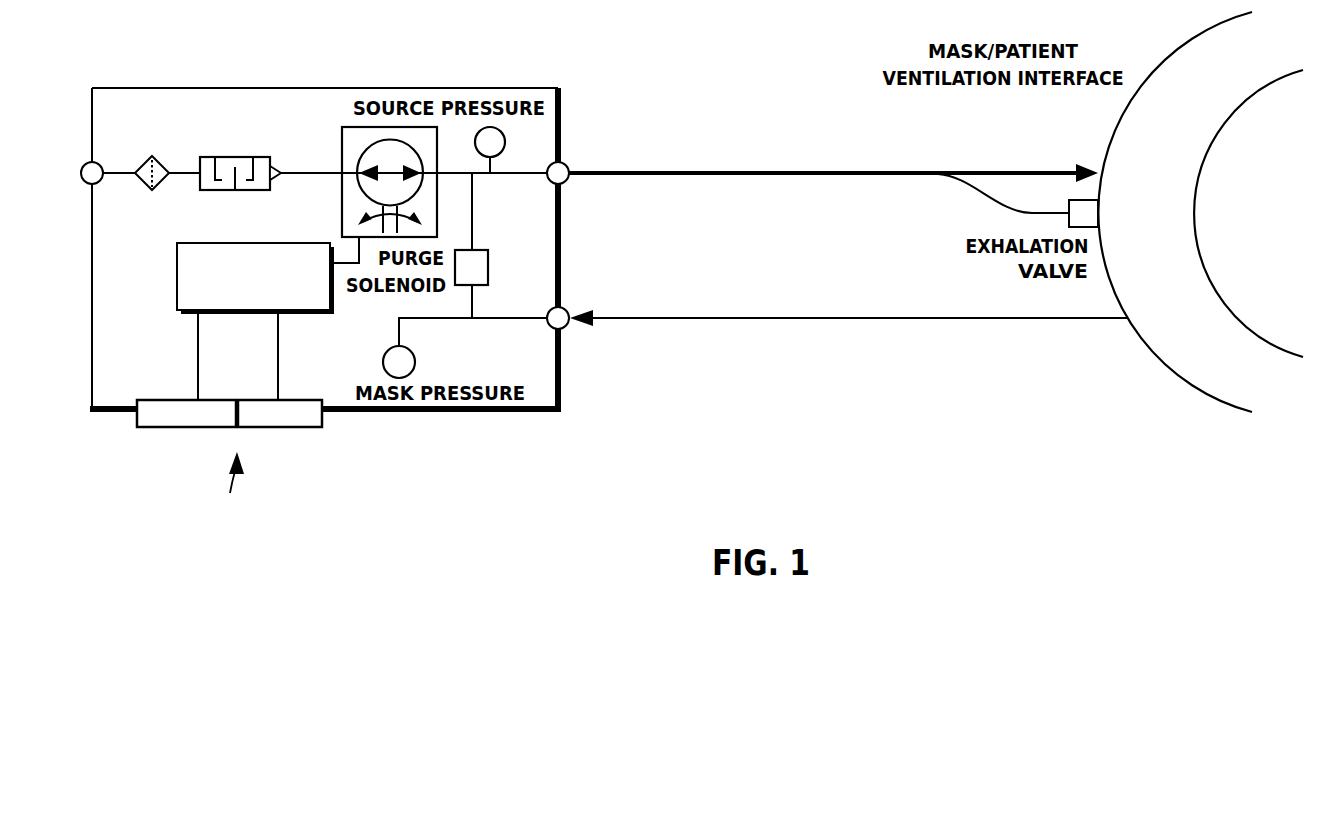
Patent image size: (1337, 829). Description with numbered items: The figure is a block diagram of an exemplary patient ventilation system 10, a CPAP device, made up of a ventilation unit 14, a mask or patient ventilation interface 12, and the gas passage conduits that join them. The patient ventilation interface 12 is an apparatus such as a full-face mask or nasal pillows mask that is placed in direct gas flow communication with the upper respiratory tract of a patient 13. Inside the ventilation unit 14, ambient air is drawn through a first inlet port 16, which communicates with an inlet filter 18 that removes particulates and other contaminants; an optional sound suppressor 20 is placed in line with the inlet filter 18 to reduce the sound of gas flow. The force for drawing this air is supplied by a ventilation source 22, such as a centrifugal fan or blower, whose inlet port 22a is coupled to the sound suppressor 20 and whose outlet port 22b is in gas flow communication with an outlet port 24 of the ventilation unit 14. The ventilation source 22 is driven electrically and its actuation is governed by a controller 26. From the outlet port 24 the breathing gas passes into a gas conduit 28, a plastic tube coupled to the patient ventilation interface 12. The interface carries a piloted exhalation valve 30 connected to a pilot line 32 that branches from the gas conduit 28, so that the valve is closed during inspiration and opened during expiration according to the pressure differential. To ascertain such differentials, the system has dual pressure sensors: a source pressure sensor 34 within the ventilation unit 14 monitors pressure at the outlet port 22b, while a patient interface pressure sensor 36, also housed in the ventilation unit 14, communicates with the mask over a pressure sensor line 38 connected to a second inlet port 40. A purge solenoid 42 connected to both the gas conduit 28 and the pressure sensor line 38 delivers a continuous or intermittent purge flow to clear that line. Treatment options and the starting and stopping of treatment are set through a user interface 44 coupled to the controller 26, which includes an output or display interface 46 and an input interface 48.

The patient ventilation system 10 is at (730, 440).
The patient ventilation interface 12 is at (1175, 212).
The patient 13 is at (1251, 213).
The ventilation unit 14 is at (338, 414).
The first inlet port 16 is at (90, 184).
The inlet filter 18 is at (152, 191).
The sound suppressor 20 is at (228, 192).
The ventilation source 22 is at (387, 182).
The inlet port 22a is at (360, 178).
The outlet port 22b is at (420, 177).
The outlet port 24 is at (569, 165).
The controller 26 is at (177, 273).
The gas conduit 28 is at (778, 168).
The piloted exhalation valve 30 is at (1088, 213).
The pilot line 32 is at (1003, 200).
The source pressure sensor 34 is at (505, 142).
The patient interface pressure sensor 36 is at (415, 362).
The pressure sensor line 38 is at (750, 315).
The second inlet port 40 is at (569, 311).
The purge solenoid 42 is at (488, 268).
The user interface 44 is at (228, 484).
The output or display interface 46 is at (193, 427).
The input interface 48 is at (279, 427).